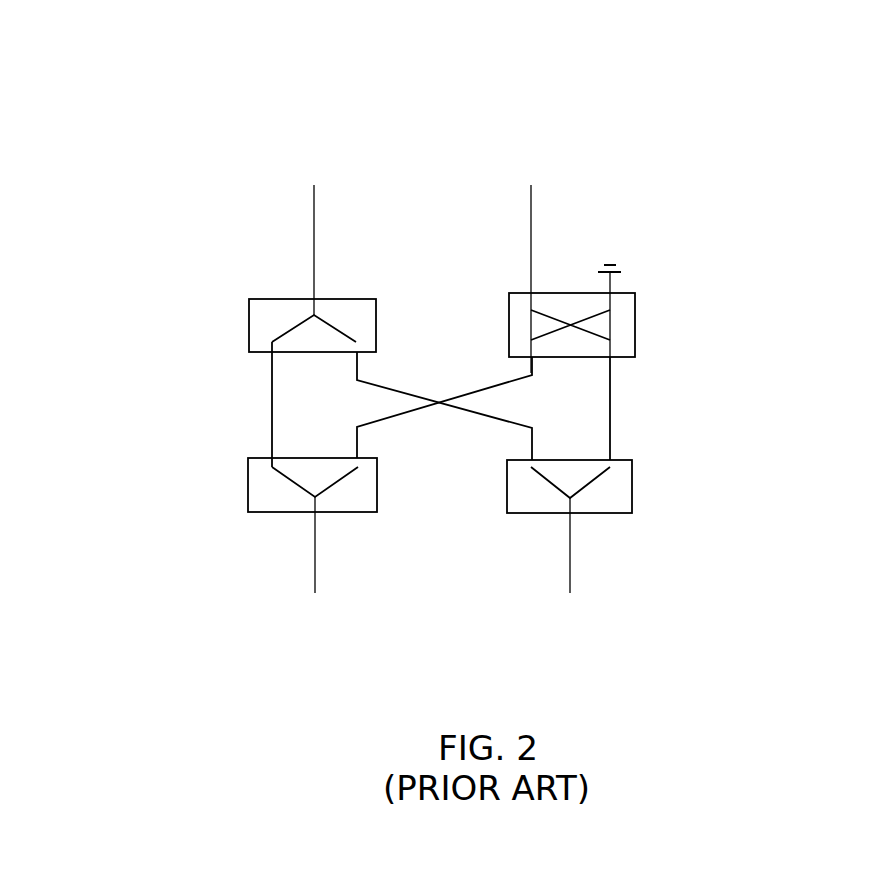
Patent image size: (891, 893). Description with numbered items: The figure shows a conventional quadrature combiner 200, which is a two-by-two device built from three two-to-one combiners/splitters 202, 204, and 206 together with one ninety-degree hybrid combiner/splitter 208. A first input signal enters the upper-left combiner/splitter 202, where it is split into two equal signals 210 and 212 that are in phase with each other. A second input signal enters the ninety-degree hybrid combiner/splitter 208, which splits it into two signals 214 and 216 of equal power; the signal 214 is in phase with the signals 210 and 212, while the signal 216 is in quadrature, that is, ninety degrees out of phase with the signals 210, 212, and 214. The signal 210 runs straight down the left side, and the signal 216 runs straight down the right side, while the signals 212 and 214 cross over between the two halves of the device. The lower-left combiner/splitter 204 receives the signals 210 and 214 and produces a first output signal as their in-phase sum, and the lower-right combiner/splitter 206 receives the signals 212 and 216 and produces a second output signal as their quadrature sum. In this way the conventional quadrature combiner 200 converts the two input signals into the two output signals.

The conventional quadrature combiner 200 is at (133, 39).
The 2:1 combiner/splitter 202 is at (249, 302).
The 2:1 combiner/splitter 204 is at (248, 492).
The 2:1 combiner/splitter 206 is at (632, 493).
The 90-degree hybrid combiner/splitter 208 is at (635, 293).
The signal 210 is at (266, 375).
The signal 212 is at (391, 381).
The signal 214 is at (484, 381).
The signal 216 is at (614, 411).